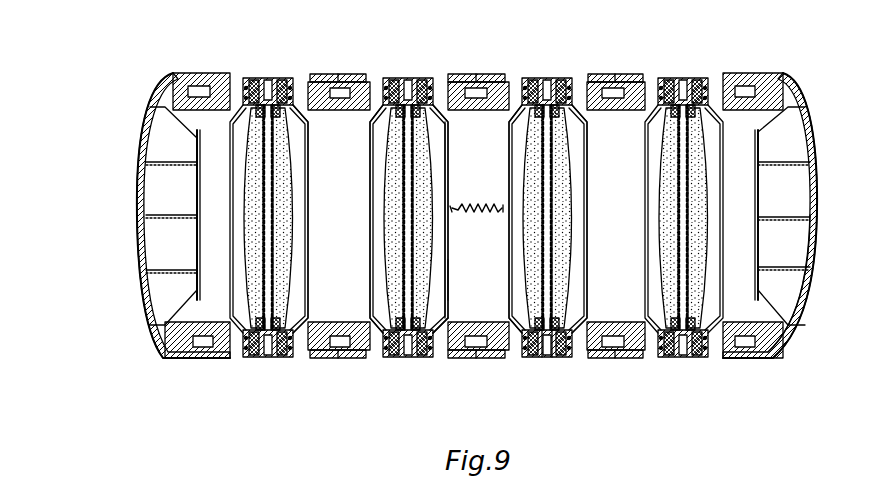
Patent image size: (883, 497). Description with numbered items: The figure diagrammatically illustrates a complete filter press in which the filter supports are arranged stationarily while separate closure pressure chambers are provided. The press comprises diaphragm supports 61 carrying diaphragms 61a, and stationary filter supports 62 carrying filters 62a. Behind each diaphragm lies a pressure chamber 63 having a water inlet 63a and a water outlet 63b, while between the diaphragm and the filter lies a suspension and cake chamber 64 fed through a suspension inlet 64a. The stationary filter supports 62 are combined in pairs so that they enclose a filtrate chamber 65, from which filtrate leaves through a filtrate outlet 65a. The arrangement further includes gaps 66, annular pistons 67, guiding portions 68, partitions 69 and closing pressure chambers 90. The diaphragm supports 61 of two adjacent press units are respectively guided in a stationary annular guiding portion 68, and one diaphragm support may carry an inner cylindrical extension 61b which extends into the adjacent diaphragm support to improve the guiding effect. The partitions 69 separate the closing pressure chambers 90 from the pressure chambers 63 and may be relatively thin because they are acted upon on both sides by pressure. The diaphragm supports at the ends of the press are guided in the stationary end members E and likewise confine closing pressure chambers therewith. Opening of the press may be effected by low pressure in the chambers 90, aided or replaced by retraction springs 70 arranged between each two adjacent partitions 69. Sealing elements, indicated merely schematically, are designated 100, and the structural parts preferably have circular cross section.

The diaphragm support 61 is at (287, 78).
The diaphragm 61a is at (303, 78).
The inner cylindrical extension 61b is at (352, 110).
The filter support 62 is at (413, 78).
The filter 62a is at (390, 78).
The pressure chamber 63 is at (445, 122).
The water inlet 63a is at (435, 78).
The water outlet 63b is at (430, 358).
The suspension and cake chamber 64 is at (522, 78).
The suspension inlet 64a is at (547, 78).
The filtrate chamber 65 is at (550, 162).
The filtrate outlet 65a is at (547, 358).
The gap 66 is at (545, 358).
The annular piston 67 is at (613, 358).
The guiding portion 68 is at (493, 358).
The partition 69 is at (505, 255).
The retraction spring 70 is at (477, 203).
The closing pressure chamber 90 is at (663, 217).
The sealing elements 100 is at (663, 77).
The end member E is at (808, 295).